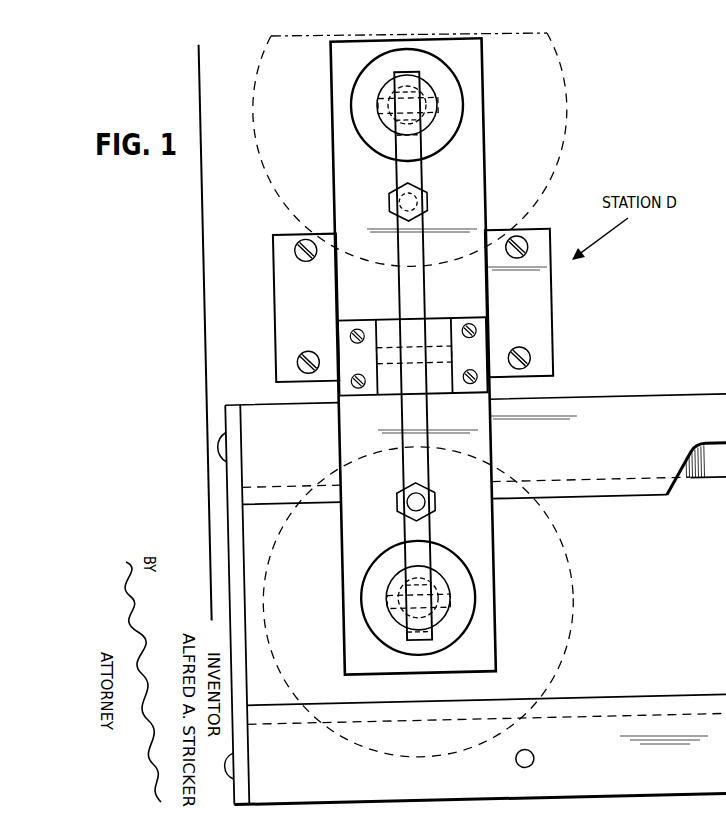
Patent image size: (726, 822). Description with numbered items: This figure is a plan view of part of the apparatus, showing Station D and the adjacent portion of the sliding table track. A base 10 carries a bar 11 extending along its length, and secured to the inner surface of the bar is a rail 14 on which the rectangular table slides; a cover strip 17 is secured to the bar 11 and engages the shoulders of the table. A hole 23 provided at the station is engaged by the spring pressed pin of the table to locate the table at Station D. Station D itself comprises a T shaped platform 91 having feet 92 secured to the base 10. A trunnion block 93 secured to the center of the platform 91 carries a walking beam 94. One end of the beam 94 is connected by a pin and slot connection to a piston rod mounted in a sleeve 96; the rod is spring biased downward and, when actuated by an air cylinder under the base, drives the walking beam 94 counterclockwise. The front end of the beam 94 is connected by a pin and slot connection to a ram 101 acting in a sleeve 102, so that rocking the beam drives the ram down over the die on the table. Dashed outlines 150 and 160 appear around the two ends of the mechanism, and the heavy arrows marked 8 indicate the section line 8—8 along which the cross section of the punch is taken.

The section line 8— 8 is at (407, 28).
The base 10 is at (709, 283).
The bar 11 is at (725, 444).
The rail 14 is at (484, 600).
The cover strip 17 is at (681, 411).
The hole 23 is at (518, 761).
The T shaped platform 91 is at (476, 162).
The feet 92 is at (538, 315).
The trunnion block 93 is at (457, 389).
The walking beam 94 is at (411, 306).
The sleeve 96 is at (429, 152).
The ram 101 is at (390, 582).
The sleeve 102 is at (430, 563).
The swing envelope of upper end 150 is at (565, 114).
The swing envelope of lower end 160 is at (567, 577).